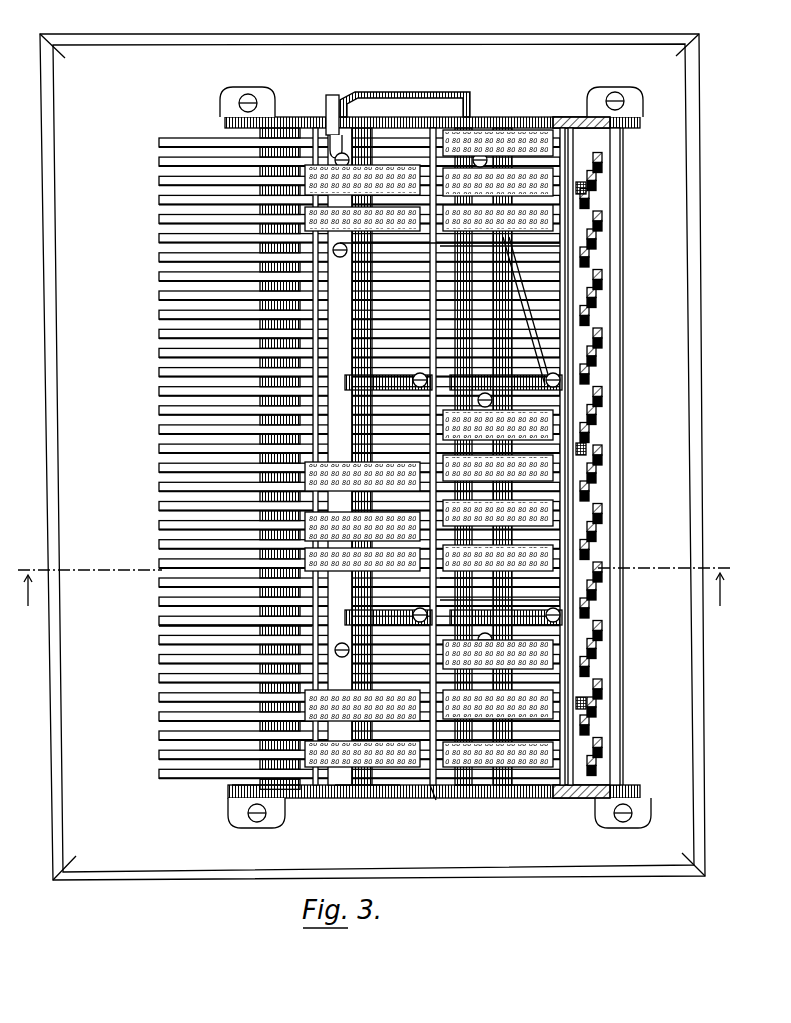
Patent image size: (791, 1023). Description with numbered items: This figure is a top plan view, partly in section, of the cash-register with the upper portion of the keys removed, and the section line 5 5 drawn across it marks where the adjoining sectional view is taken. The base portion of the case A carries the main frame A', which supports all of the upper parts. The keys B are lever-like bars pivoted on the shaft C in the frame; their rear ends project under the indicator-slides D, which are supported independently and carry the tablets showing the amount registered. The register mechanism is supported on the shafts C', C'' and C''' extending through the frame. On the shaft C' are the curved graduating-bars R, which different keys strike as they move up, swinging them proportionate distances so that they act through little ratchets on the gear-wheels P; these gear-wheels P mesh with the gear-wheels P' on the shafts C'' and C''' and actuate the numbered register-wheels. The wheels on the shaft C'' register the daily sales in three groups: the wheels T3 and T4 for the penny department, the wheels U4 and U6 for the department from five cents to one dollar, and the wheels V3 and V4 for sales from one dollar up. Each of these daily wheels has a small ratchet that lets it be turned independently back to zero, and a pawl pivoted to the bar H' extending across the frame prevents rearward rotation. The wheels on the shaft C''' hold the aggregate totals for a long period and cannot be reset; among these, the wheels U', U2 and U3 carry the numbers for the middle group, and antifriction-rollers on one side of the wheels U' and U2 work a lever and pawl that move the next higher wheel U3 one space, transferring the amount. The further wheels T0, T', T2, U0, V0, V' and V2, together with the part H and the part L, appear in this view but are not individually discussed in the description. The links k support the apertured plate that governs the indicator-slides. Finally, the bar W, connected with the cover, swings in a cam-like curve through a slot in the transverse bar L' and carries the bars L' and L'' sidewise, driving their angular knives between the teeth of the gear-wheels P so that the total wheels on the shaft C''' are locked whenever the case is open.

The base portion of the case A is at (435, 470).
The main frame A' is at (577, 455).
The keys B is at (162, 338).
The shaft C is at (266, 808).
The shaft C' is at (472, 807).
The shaft C'' is at (367, 808).
The shaft C''' is at (525, 806).
The indicator-slides D is at (584, 300).
The rail H is at (605, 221).
The bar H' is at (435, 806).
The links k is at (588, 189).
The bar L is at (212, 628).
The transverse bar L' is at (340, 456).
The bar L'' is at (331, 116).
The gear-wheels P is at (549, 539).
The gear-wheels P' is at (384, 531).
The graduating-bars R is at (582, 319).
The tens scale plate T0 is at (566, 146).
The tens scale plate T' is at (542, 182).
The tens scale plate T2 is at (560, 208).
The register-wheel T3 is at (162, 182).
The register-wheel T4 is at (162, 217).
The units scale plate U0 is at (586, 425).
The gear-wheel U' is at (544, 468).
The gear-wheel U2 is at (560, 507).
The gear-wheel U3 is at (560, 550).
The register-wheel U4 is at (162, 486).
The register-wheel U6 is at (162, 527).
The scale plate V0 is at (576, 656).
The scale plate V' is at (543, 699).
The scale plate V2 is at (560, 740).
The register-wheel V3 is at (162, 716).
The register-wheel V4 is at (162, 748).
The bar W is at (426, 94).
The section line 5 is at (374, 576).